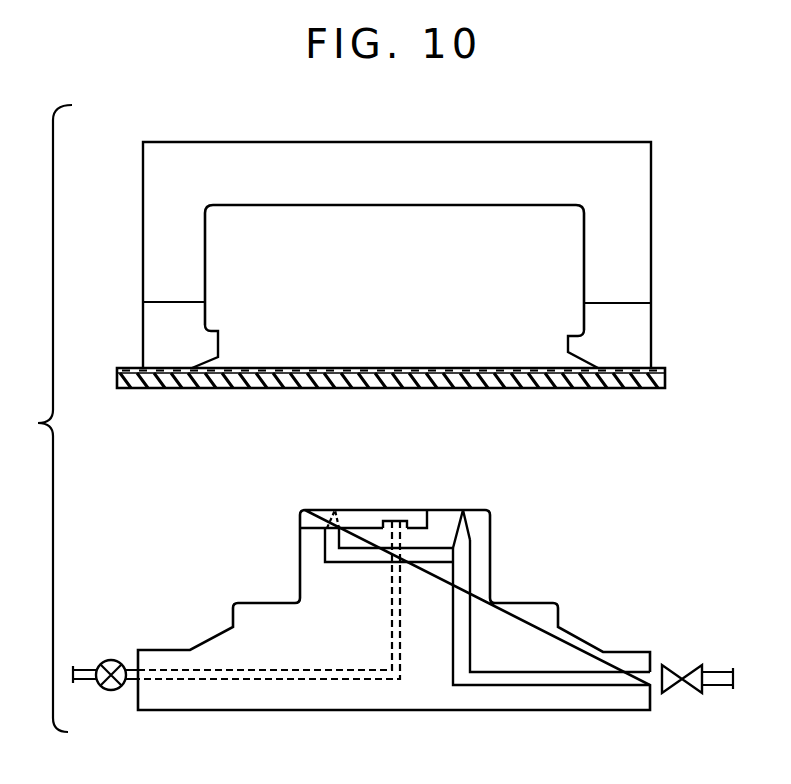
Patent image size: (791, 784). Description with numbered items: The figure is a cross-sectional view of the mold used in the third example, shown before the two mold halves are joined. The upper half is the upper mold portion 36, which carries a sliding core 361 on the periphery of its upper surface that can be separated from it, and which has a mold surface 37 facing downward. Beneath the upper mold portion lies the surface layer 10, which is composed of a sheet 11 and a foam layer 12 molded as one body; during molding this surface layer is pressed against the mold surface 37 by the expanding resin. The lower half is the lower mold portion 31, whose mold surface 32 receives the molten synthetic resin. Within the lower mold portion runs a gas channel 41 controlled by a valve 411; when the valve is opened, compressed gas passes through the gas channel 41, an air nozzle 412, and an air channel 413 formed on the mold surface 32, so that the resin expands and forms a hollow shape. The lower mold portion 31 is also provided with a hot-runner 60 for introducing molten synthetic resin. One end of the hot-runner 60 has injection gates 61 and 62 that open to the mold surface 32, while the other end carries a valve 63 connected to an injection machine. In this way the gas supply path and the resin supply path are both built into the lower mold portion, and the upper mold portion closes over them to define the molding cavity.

The surface layer 10 is at (376, 377).
The sheet 11 is at (130, 366).
The foam layer 12 is at (133, 391).
The upper mold portion 36 is at (158, 174).
The sliding core 361 is at (158, 308).
The mold surface 37 is at (419, 204).
The lower mold portion 31 is at (322, 590).
The mold surface 32 is at (347, 510).
The air nozzle 412 is at (395, 521).
The air channel 413 is at (368, 523).
The gas channel 41 is at (237, 681).
The valve 411 is at (110, 690).
The hot-runner 60 is at (540, 686).
The injection gate 61 is at (465, 529).
The injection gate 62 is at (330, 537).
The valve 63 is at (683, 672).